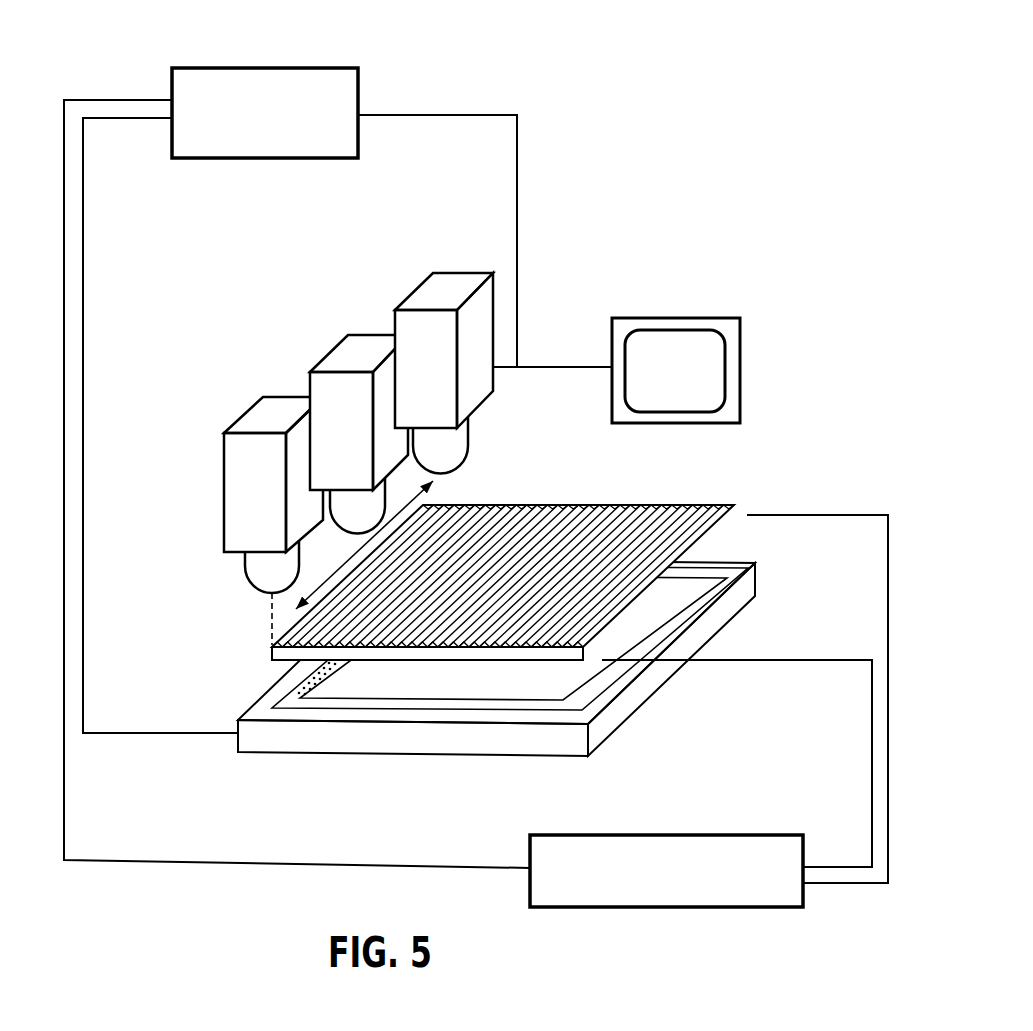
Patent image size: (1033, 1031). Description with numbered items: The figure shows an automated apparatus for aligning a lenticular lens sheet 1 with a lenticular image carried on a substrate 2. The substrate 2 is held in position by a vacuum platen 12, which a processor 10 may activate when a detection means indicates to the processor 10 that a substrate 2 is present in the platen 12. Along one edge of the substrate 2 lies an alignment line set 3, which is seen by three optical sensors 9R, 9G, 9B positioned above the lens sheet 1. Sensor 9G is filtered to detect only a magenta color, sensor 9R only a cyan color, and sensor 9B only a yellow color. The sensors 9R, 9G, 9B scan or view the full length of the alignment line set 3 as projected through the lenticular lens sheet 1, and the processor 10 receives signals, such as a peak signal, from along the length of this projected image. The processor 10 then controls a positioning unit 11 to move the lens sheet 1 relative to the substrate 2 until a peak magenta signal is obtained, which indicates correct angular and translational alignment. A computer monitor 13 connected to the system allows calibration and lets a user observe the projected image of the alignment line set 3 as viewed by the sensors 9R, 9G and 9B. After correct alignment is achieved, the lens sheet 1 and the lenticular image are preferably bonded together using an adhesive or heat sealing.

The lenticular lens sheet 1 is at (468, 505).
The substrate 2 is at (457, 710).
The alignment line set 3 is at (297, 698).
The optical sensor 9R is at (252, 413).
The optical sensor 9G is at (333, 357).
The optical sensor 9B is at (413, 300).
The processor 10 is at (323, 68).
The positioning unit 11 is at (740, 833).
The vacuum platen 12 is at (625, 718).
The computer monitor 13 is at (708, 318).